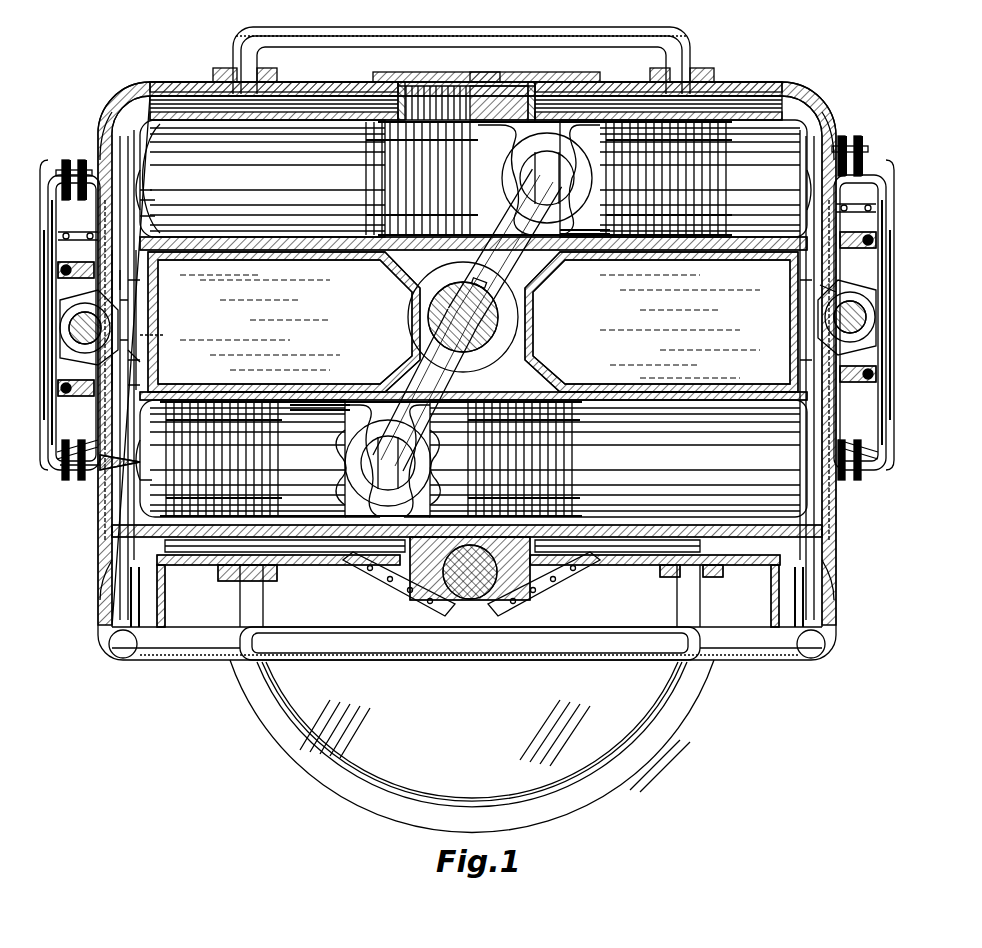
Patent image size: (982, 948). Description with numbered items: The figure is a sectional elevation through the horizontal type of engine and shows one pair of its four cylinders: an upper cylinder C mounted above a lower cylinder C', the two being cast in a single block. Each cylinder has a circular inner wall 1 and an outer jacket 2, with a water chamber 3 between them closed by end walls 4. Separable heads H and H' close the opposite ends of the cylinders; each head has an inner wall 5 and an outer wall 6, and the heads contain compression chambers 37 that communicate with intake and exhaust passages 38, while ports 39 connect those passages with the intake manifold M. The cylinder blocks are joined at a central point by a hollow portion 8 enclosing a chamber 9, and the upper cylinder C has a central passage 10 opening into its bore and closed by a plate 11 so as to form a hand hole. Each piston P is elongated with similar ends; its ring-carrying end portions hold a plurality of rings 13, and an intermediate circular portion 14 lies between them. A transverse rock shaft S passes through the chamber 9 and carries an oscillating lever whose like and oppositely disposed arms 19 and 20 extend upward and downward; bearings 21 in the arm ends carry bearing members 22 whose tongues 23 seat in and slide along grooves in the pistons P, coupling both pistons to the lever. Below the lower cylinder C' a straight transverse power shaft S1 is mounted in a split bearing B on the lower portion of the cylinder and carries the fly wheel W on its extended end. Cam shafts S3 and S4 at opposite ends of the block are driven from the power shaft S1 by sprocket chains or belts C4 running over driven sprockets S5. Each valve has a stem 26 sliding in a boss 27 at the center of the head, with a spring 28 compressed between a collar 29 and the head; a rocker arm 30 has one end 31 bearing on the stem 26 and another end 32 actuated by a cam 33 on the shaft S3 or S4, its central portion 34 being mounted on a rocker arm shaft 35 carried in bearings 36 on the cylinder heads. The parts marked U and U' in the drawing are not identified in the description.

The circular inner wall 1 is at (330, 100).
The outer jacket 2 is at (300, 98).
The water chamber 3 is at (272, 96).
The end walls 4 is at (215, 88).
The inner walls 5 is at (124, 98).
The outer walls 6 is at (128, 112).
The hollow portion 8 is at (408, 322).
The chamber 9 is at (525, 360).
The central passages 10 is at (470, 95).
The plate 11 is at (446, 72).
The rings 13 is at (380, 180).
The intermediate circular portion 14 is at (588, 240).
The arm 19 is at (478, 252).
The arm 20 is at (470, 394).
The bearings 21 is at (360, 444).
The bearing members 22 is at (362, 492).
The tongues 23 is at (416, 464).
The valve stems 26 is at (72, 472).
The bosses 27 is at (150, 192).
The springs 28 is at (78, 160).
The collars 29 is at (72, 160).
The rocker arm 30 is at (840, 320).
The end of rocker arm 31 is at (50, 170).
The end of rocker arm 32 is at (74, 352).
The cams 33 is at (124, 330).
The central portions 34 is at (132, 273).
The rocker arm shafts 35 is at (864, 372).
The bearings 36 is at (824, 374).
The compression chambers 37 is at (150, 216).
The intake and exhaust passages 38 is at (148, 198).
The ports 39 is at (150, 338).
The split bearing B is at (395, 594).
The cylinder C is at (473, 185).
The cylinder C' is at (473, 454).
The sprocket chains or belts C4 is at (72, 232).
The head H is at (104, 334).
The head H' is at (844, 335).
The intake manifold M is at (160, 626).
The piston P is at (366, 168).
The rock shaft S is at (512, 318).
The power shaft S1 is at (536, 590).
The cam shaft S3 is at (834, 318).
The cam shaft S4 is at (112, 292).
The driven sprockets S5 is at (130, 360).
The solenoid coil U is at (499, 289).
The solenoid coil U' is at (157, 463).
The fly wheel W is at (472, 746).